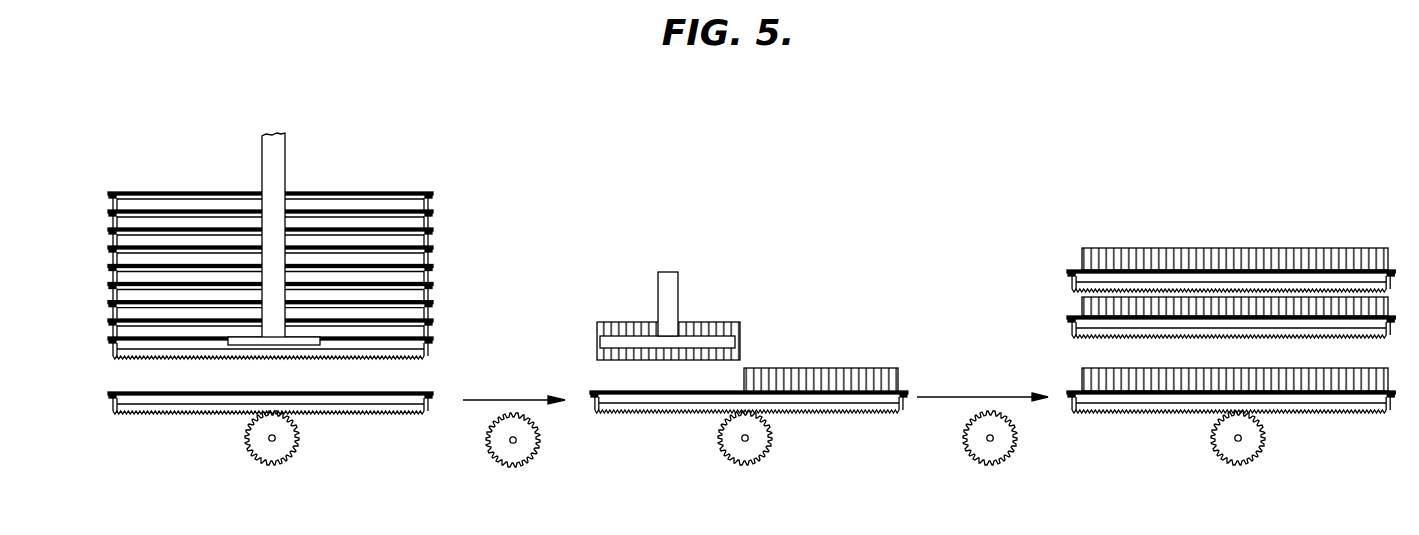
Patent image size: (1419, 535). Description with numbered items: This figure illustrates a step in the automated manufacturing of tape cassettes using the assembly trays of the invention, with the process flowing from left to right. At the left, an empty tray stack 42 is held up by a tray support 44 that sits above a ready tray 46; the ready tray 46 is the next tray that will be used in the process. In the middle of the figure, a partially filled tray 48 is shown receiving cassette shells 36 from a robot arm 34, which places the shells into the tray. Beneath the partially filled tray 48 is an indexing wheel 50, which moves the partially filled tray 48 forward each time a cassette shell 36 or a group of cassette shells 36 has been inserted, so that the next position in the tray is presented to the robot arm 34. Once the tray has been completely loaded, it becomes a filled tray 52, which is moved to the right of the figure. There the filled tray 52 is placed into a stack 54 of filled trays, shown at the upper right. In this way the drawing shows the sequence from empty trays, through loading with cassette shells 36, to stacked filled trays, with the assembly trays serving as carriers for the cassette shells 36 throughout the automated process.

The robot arm 34 is at (679, 293).
The cassette shells 36 is at (798, 368).
The empty tray stack 42 is at (450, 242).
The tray support 44 is at (287, 163).
The ready tray 46 is at (418, 400).
The partially filled tray 48 is at (600, 402).
The indexing wheel 50 is at (772, 438).
The filled tray 52 is at (1080, 396).
The stack of filled trays 54 is at (1038, 284).